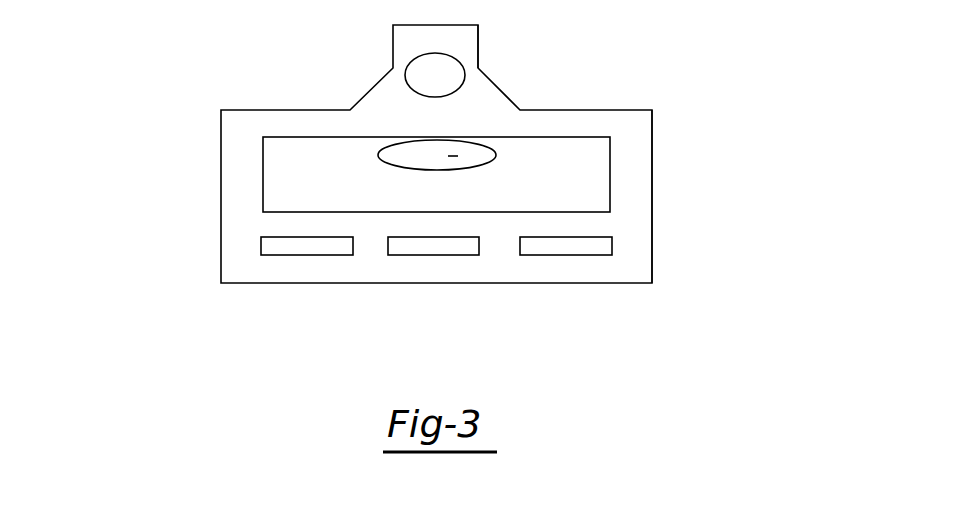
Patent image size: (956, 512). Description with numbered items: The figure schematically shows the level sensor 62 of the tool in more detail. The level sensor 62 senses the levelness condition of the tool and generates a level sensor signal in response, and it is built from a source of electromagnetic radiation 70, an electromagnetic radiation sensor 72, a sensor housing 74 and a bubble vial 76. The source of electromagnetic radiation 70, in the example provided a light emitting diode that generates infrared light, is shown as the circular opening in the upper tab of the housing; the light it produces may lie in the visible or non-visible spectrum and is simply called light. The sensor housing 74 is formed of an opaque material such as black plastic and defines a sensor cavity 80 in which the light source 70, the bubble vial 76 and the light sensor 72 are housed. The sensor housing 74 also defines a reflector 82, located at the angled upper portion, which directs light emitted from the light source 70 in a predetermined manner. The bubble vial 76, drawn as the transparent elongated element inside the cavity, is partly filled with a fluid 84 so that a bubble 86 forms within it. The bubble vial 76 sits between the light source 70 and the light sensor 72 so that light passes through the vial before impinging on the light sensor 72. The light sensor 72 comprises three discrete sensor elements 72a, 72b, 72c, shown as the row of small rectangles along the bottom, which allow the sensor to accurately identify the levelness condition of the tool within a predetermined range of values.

The level sensor 62 is at (419, 186).
The source of electromagnetic radiation 70 is at (403, 48).
The electromagnetic radiation sensor 72 is at (489, 302).
The discrete sensor element 72a is at (313, 255).
The discrete sensor element 72b is at (433, 255).
The discrete sensor element 72c is at (565, 255).
The sensor housing 74 is at (652, 145).
The bubble vial 76 is at (487, 128).
The sensor cavity 80 is at (250, 122).
The reflector 82 is at (480, 35).
The fluid 84 is at (278, 150).
The bubble 86 is at (453, 156).